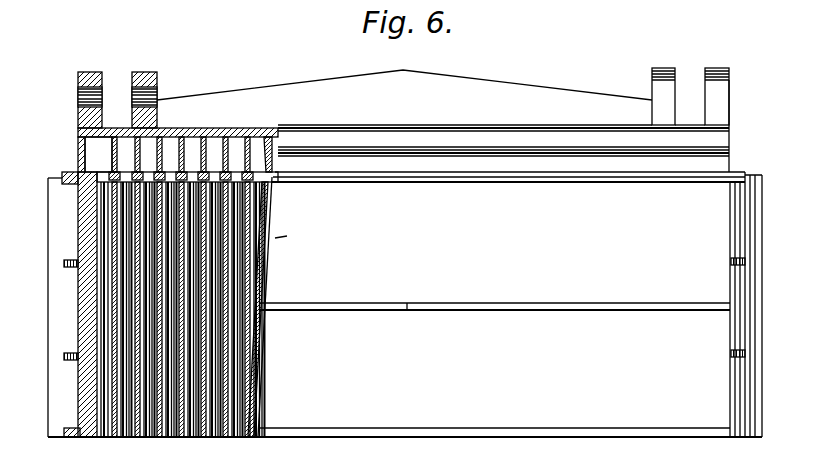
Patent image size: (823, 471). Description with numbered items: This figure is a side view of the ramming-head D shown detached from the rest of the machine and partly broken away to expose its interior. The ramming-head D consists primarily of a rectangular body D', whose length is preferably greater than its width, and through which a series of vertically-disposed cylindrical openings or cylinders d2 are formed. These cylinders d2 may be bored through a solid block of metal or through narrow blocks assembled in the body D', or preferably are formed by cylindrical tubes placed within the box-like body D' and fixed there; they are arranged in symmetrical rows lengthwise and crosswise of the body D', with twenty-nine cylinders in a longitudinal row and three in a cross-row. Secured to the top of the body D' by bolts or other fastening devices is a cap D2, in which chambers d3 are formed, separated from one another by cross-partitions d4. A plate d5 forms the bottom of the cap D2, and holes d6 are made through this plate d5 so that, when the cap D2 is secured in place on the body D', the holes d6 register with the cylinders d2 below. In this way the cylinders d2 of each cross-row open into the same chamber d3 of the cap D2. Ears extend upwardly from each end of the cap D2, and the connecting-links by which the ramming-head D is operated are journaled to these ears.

The cylinders d2 is at (271, 350).
The chambers d3 is at (238, 150).
The cross-partitions d4 is at (194, 152).
The plate d5 is at (78, 172).
The holes d6 is at (78, 204).
The ramming-head D is at (443, 114).
The rectangular body D' is at (494, 309).
The cap D2 is at (508, 152).
The side wall d is at (761, 306).